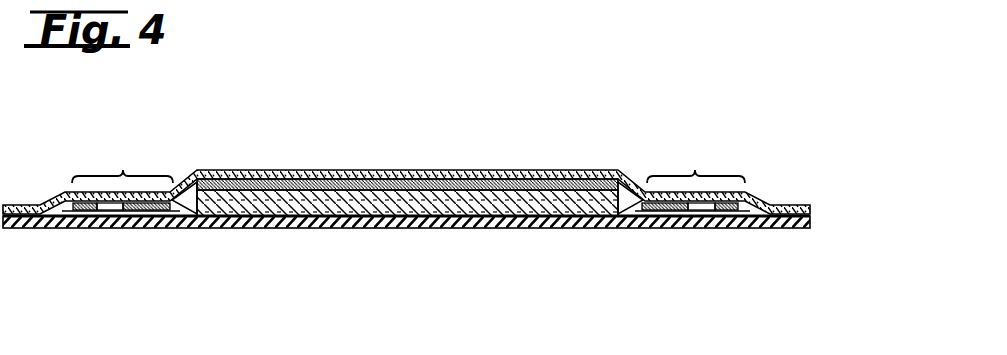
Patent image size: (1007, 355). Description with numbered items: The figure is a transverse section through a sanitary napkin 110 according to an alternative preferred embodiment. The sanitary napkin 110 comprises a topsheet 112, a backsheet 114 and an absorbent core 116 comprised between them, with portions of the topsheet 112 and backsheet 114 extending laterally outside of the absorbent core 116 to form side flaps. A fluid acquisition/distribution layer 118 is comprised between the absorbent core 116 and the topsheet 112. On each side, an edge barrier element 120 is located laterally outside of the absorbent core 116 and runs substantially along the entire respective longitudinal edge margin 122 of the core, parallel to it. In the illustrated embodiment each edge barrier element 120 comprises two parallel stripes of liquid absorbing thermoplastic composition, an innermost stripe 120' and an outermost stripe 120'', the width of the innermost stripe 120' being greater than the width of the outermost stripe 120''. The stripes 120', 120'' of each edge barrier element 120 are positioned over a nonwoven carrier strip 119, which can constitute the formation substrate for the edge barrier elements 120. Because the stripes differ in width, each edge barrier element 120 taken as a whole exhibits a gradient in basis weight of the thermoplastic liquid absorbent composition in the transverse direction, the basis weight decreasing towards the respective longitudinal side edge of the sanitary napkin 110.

The sanitary napkin 110 is at (788, 138).
The topsheet 112 is at (498, 178).
The backsheet 114 is at (503, 222).
The absorbent core 116 is at (381, 216).
The fluid acquisition/distribution layer 118 is at (318, 184).
The nonwoven carrier strip 119 is at (128, 212).
The edge barrier element 120 is at (404, 148).
The innermost stripe 120' is at (405, 258).
The outermost stripe 120'' is at (410, 258).
The longitudinal edge margin 122 is at (178, 182).